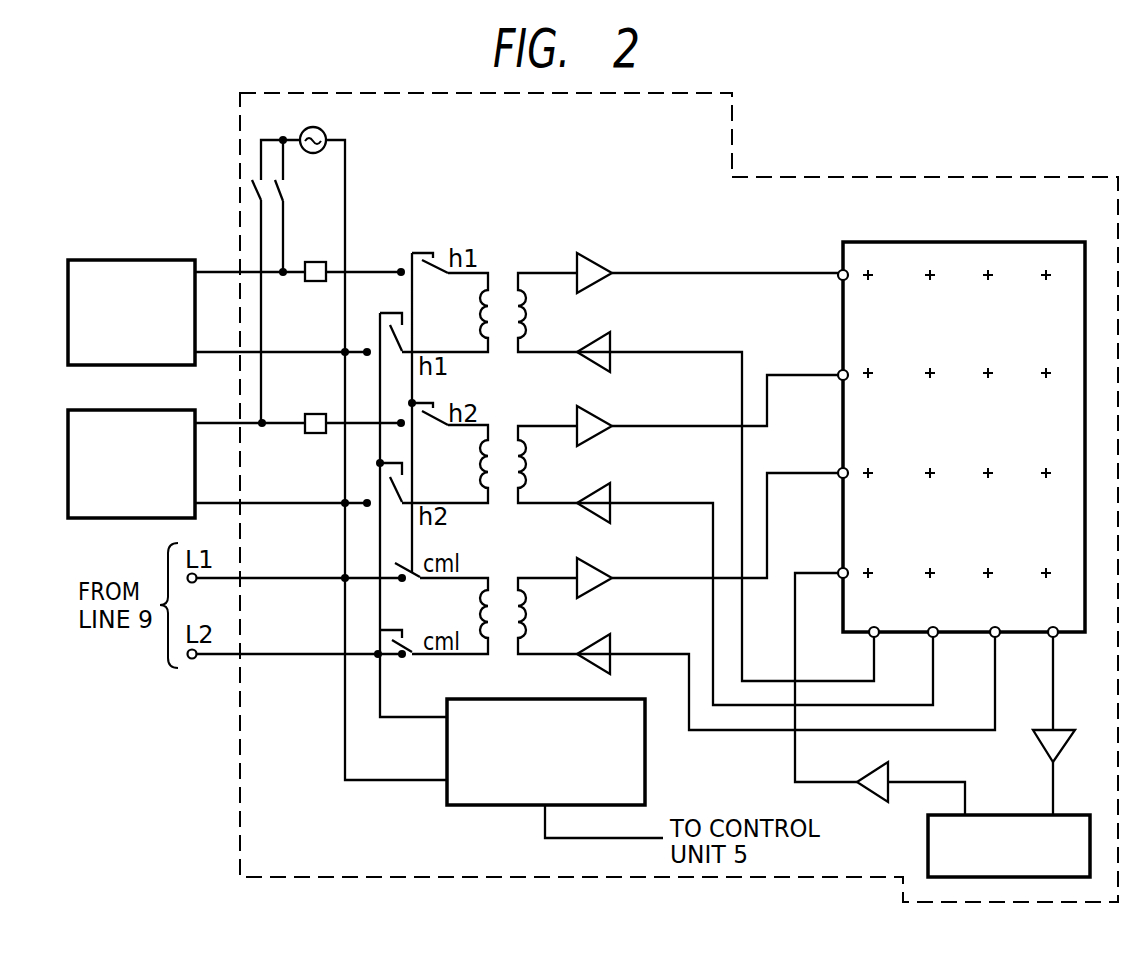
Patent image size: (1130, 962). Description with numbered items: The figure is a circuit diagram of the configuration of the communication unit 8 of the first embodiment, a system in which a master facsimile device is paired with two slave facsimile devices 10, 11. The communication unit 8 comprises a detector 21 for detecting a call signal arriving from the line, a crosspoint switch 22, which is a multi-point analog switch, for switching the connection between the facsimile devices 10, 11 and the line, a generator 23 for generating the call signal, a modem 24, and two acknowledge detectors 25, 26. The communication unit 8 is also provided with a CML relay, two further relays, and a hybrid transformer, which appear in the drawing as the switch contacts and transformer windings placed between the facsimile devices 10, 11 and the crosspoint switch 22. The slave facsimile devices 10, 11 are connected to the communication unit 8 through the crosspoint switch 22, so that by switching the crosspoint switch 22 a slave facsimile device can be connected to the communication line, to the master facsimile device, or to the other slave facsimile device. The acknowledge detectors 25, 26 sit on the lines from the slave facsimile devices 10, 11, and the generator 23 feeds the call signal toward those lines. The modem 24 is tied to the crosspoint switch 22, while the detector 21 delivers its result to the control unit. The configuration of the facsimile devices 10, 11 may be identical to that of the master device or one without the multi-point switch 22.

The communication unit 8 is at (803, 177).
The facsimile device 10 is at (183, 260).
The facsimile device 11 is at (173, 410).
The detector 21 is at (487, 808).
The crosspoint switch 22 is at (1033, 242).
The generator 23 is at (322, 131).
The modem 24 is at (1012, 815).
The acknowledge detector 25 is at (315, 262).
The acknowledge detector 26 is at (317, 414).